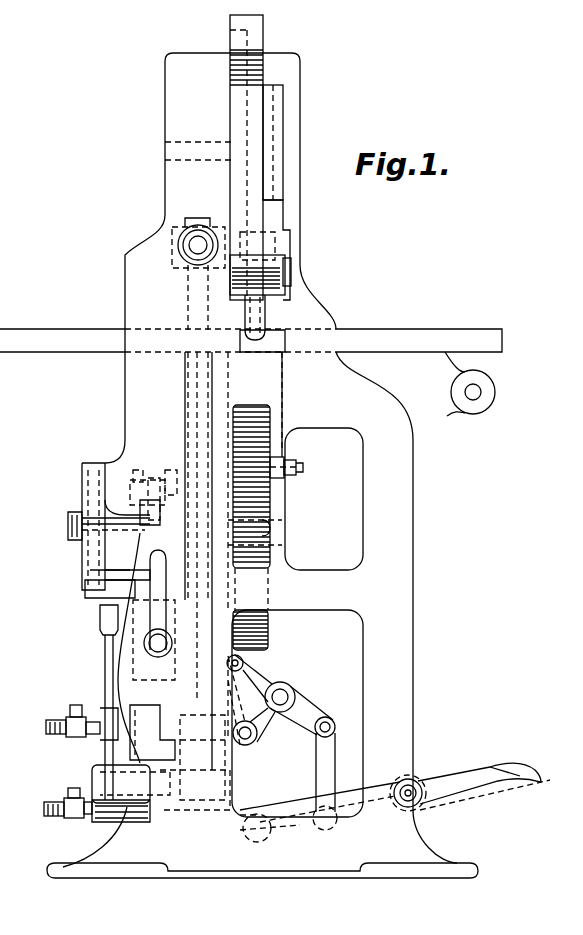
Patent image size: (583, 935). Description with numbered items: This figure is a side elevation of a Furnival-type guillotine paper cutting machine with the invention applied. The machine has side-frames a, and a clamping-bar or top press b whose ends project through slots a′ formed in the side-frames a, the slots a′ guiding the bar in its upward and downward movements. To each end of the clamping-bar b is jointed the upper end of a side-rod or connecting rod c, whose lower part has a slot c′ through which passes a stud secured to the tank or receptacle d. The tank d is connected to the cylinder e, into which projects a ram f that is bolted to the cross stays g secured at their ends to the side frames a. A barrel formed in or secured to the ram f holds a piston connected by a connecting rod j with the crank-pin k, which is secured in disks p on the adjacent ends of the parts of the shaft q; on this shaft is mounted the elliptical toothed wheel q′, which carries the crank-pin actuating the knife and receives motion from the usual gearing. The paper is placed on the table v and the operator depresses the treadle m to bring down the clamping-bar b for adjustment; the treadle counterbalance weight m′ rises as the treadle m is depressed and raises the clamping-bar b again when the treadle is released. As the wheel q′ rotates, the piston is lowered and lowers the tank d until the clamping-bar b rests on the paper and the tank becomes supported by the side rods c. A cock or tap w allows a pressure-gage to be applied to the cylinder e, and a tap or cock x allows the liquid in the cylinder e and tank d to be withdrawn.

The side-frame a is at (271, 465).
The slot a′ is at (192, 225).
The clamping-bar or top press b is at (176, 258).
The side-rod or connecting rod c is at (197, 561).
The slot c′ is at (160, 625).
The tank or receptacle d is at (158, 643).
The cylinder e is at (104, 702).
The ram f is at (100, 598).
The cross stay g is at (82, 490).
The connecting rod j is at (150, 480).
The crank-pin k is at (138, 502).
The treadle m is at (395, 781).
The treadle counterbalance weight m′ is at (282, 748).
The disk p is at (153, 474).
The shaft q is at (68, 530).
The elliptical toothed wheel q′ is at (248, 405).
The table v is at (251, 342).
The cock or tap w is at (70, 722).
The tap or cock x is at (91, 802).